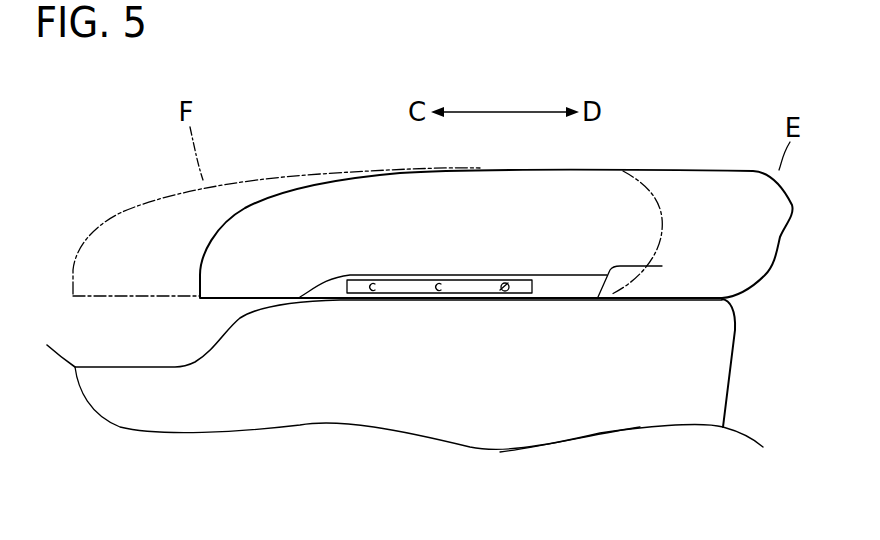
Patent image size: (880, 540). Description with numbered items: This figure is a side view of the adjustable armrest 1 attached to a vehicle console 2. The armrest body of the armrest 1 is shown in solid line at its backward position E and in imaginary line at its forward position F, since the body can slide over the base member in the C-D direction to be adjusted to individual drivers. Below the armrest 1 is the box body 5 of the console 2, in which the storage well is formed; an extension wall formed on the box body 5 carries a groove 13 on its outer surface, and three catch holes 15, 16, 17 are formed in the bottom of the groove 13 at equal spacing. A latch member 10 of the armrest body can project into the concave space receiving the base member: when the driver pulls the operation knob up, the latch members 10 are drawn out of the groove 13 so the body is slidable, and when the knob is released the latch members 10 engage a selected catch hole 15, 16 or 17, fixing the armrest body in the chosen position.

The armrest 1 is at (300, 175).
The vehicle console 2 is at (738, 345).
The box body 5 is at (518, 410).
The latch members 10 is at (508, 290).
The groove 13 is at (412, 288).
The catch hole 15 is at (492, 294).
The catch hole 16 is at (438, 303).
The catch hole 17 is at (373, 303).